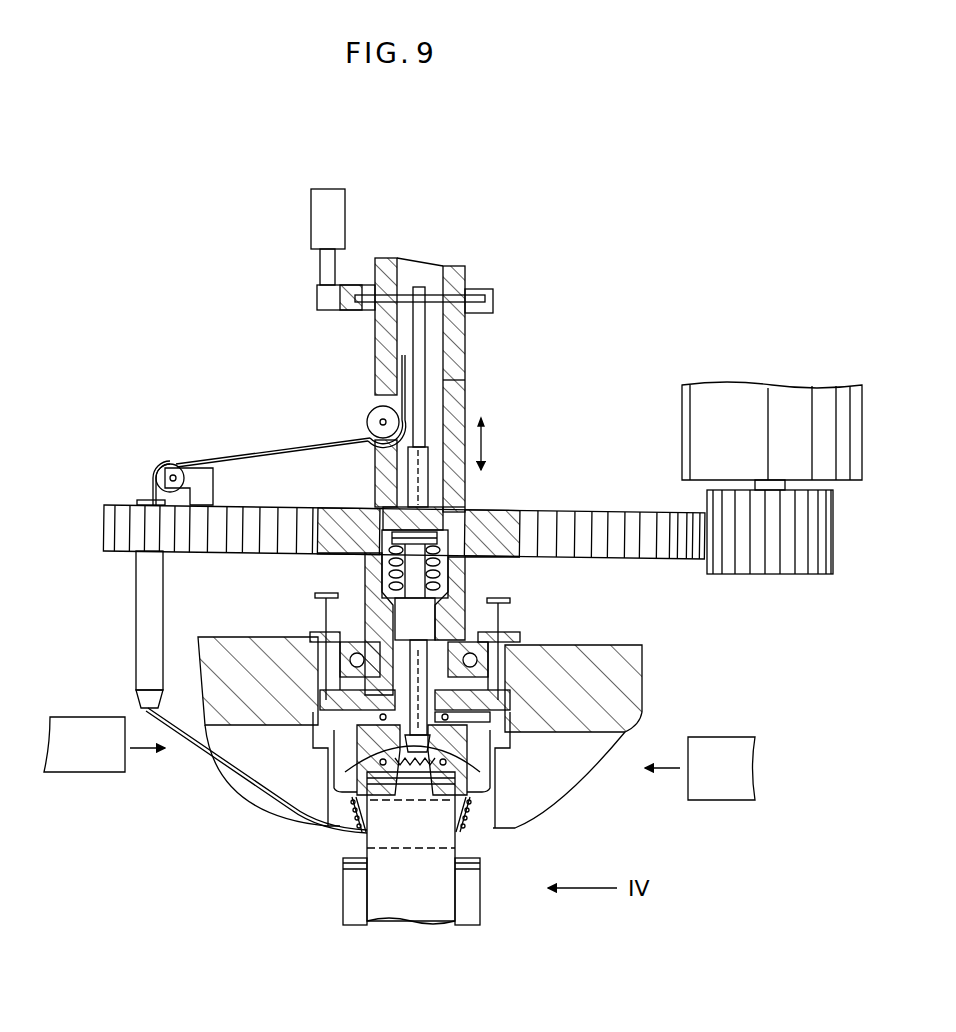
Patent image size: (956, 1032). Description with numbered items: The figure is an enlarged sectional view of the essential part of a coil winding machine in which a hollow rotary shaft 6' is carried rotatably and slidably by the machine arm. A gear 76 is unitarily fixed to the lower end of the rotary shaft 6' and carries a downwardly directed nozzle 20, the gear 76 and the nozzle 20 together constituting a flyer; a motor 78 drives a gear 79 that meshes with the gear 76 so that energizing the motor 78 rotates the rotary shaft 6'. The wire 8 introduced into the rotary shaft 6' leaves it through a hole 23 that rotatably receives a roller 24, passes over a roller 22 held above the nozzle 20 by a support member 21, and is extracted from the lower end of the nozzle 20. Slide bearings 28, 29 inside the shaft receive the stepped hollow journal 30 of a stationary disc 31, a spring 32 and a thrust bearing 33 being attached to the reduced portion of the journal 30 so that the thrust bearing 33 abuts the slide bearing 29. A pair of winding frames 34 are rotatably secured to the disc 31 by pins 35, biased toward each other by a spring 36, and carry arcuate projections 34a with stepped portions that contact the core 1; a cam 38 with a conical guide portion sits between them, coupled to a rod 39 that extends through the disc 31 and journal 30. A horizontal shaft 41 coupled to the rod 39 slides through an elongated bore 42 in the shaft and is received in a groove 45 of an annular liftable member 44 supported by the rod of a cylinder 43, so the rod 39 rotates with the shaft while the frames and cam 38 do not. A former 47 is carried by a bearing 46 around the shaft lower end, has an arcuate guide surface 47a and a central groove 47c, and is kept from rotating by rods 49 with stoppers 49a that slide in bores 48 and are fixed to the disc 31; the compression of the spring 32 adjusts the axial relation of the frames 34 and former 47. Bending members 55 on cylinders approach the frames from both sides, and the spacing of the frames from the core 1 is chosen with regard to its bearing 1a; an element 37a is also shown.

The core 1 is at (418, 922).
The bearing of the core 1a is at (342, 890).
The rotary shaft 6' is at (469, 371).
The wire 8 is at (262, 444).
The nozzle 20 is at (134, 660).
The support member 21 is at (214, 485).
The roller 22 is at (166, 464).
The hole 23 is at (375, 395).
The roller 24 is at (366, 418).
The slide bearing 28 is at (368, 589).
The slide bearing 29 is at (460, 500).
The stepped hollow journal 30 is at (430, 622).
The stationary disc 31 is at (318, 698).
The spring 32 is at (448, 580).
The thrust bearing 33 is at (380, 510).
The winding frame 34 is at (490, 836).
The arcuate projection 34a is at (356, 770).
The pin 35 is at (492, 718).
The spring 36 is at (396, 778).
The roller chain 37a is at (472, 833).
The cam 38 is at (482, 772).
The rod 39 is at (420, 418).
The horizontal shaft 41 is at (462, 297).
The elongated bore 42 is at (466, 330).
The cylinder 43 is at (346, 212).
The annular liftable member 44 is at (494, 308).
The groove 45 is at (490, 298).
The bearing 46 is at (331, 644).
The former 47 is at (612, 645).
The arcuate guide surface 47a is at (598, 805).
The groove 47c is at (566, 824).
The bore 48 is at (500, 686).
The rod 49 is at (488, 665).
The stopper 49a is at (500, 612).
The bending member 55 is at (100, 774).
The gear 76 is at (252, 552).
The motor 78 is at (682, 416).
The gear 79 is at (778, 576).